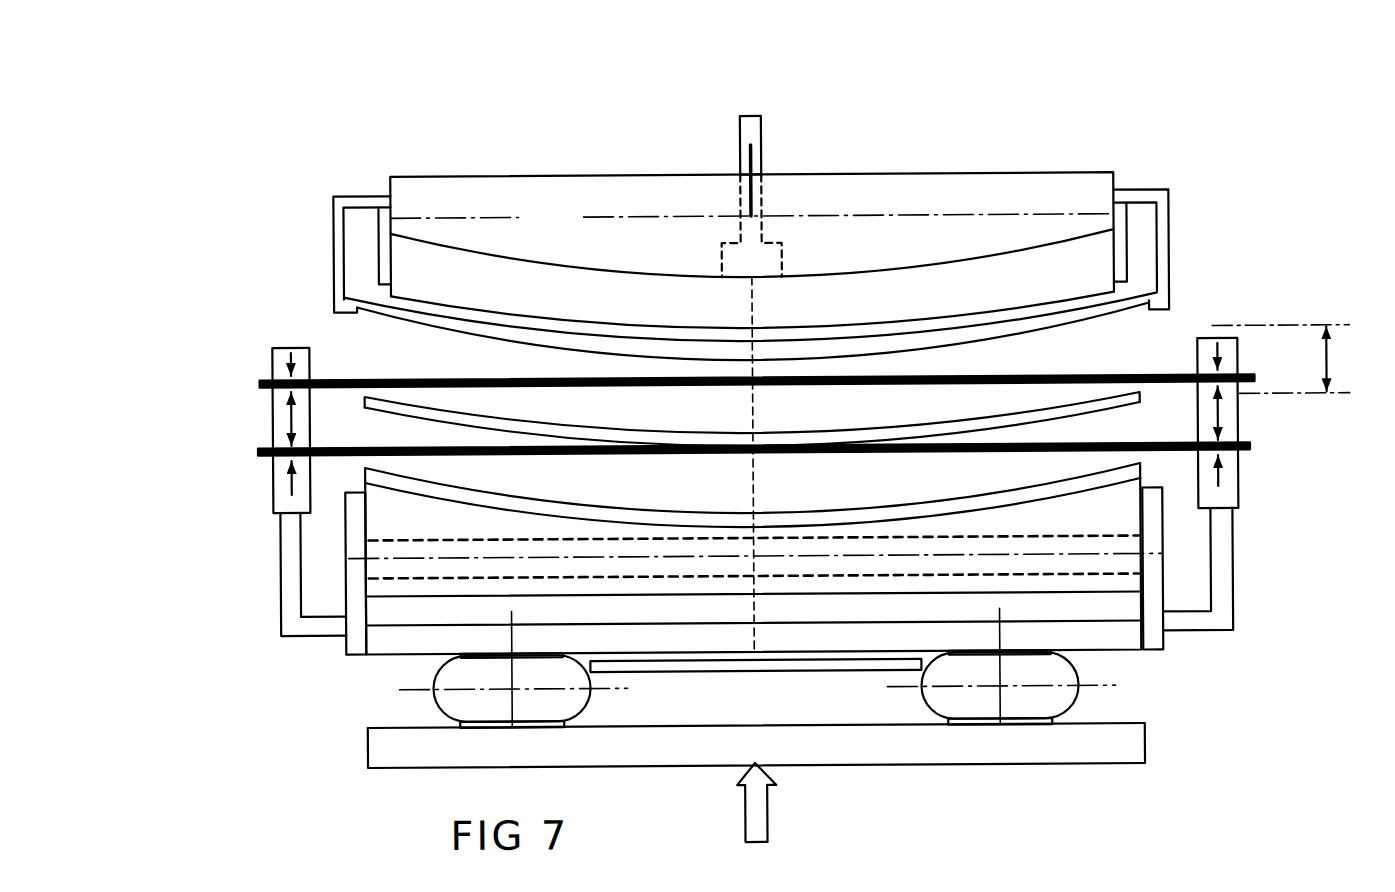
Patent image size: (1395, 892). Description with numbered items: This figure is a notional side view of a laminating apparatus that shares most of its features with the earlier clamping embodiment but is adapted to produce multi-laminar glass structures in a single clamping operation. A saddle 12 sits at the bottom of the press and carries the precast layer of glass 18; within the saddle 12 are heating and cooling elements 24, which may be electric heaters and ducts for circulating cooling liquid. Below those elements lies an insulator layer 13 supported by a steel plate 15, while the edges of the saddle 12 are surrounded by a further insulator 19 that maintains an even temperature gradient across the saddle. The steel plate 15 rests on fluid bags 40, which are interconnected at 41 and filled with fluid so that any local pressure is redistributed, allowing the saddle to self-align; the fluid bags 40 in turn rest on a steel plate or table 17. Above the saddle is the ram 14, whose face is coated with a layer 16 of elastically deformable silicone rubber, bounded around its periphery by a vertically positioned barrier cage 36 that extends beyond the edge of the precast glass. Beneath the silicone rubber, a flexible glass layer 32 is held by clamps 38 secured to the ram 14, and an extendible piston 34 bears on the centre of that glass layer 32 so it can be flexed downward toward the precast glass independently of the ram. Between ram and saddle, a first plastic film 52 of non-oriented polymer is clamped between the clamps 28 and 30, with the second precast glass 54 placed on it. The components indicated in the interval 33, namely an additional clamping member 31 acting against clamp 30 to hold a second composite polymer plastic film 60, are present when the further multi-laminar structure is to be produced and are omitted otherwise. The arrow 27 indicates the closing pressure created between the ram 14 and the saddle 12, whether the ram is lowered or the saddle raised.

The saddle 12 is at (406, 519).
The insulator layer 13 is at (1123, 604).
The ram 14 is at (930, 195).
The steel plate 15 is at (1121, 640).
The layer of elastically deformable material 16 is at (500, 272).
The table 17 is at (1126, 747).
The precast layer of glass 18 is at (456, 491).
The insulator 19 is at (1151, 582).
The heating and cooling elements 24 is at (978, 569).
The arrow 27 is at (757, 796).
The clamp 28 is at (1239, 494).
The clamp 30 is at (1233, 422).
The additional clamping member 31 is at (271, 352).
The flexible glass layer 32 is at (1008, 327).
The interval 33 is at (1292, 359).
The extendible piston 34 is at (762, 116).
The barrier cage 36 is at (382, 208).
The clamps 38 is at (340, 191).
The fluid bags 40 is at (1061, 675).
The interconnection 41 is at (736, 674).
The first plastic film 52 is at (257, 448).
The second precast glass 54 is at (1097, 411).
The second composite polymer plastic film 60 is at (1070, 376).